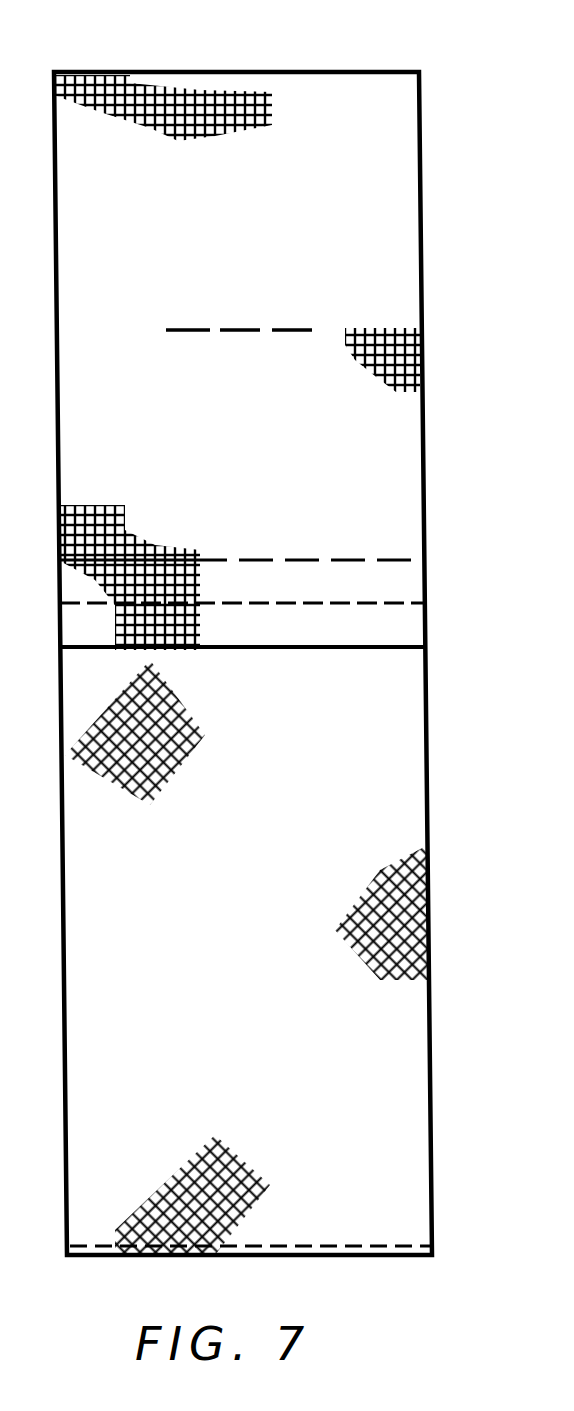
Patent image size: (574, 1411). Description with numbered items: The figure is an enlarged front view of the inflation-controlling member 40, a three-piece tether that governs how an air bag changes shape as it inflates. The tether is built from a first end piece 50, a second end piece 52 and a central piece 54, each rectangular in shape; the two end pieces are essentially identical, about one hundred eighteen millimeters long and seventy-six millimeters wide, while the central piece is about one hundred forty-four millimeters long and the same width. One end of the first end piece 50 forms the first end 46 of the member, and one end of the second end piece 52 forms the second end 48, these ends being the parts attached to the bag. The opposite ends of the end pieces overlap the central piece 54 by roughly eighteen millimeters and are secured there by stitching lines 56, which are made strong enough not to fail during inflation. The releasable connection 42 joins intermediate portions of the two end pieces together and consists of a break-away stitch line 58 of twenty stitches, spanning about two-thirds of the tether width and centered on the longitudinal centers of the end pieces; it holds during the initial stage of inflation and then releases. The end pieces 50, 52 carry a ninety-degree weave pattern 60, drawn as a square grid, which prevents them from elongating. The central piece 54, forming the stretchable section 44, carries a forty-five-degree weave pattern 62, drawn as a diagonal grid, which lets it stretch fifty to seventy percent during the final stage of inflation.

The inflation-controlling member 40 is at (286, 62).
The releasable connection 42 is at (286, 318).
The stretchable section 44 is at (388, 737).
The first end 46 is at (402, 93).
The second end 48 is at (372, 158).
The first end piece 50 is at (380, 197).
The second end piece 52 is at (372, 231).
The central piece 54 is at (388, 790).
The stitching lines 56 is at (392, 601).
The break-away stitch line 58 is at (187, 328).
The 90° weave pattern 60 is at (410, 362).
The 45° weave pattern 62 is at (428, 918).